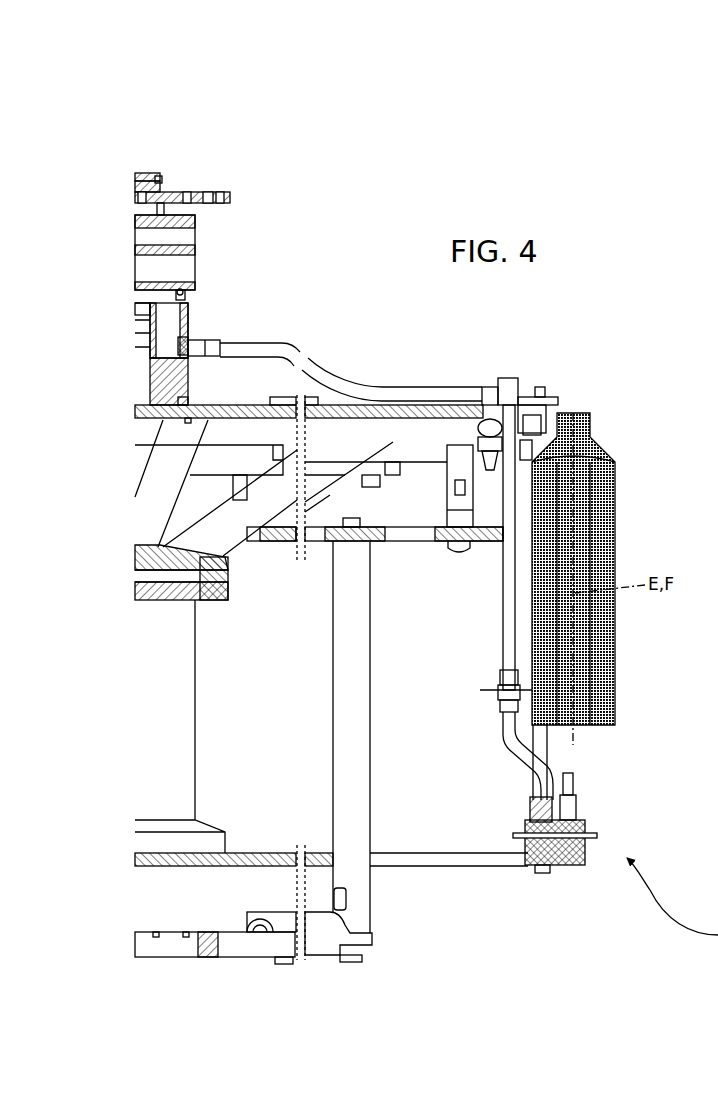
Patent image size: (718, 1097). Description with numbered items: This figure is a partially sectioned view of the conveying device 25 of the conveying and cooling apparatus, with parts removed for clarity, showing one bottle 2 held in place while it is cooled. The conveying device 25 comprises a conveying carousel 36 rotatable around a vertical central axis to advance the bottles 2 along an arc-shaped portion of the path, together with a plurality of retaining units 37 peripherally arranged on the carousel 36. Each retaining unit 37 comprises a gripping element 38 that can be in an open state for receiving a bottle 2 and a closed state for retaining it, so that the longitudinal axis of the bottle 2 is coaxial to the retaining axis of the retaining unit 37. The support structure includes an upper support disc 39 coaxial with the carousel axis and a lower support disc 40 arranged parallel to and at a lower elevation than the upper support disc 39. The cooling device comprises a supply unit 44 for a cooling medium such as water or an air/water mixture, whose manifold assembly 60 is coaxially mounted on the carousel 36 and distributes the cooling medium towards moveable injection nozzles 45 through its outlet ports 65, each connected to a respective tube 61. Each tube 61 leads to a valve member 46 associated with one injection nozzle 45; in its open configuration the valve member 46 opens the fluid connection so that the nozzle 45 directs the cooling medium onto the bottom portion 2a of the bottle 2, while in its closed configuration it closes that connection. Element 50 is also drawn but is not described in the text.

The bottle 2 is at (622, 522).
The bottom portion 2a is at (588, 730).
The conveying device 25 is at (338, 230).
The conveying carousel 36 is at (478, 360).
The retaining unit 37 is at (530, 374).
The gripping element 38 is at (544, 432).
The upper support disc 39 is at (433, 410).
The lower support disc 40 is at (453, 856).
The supply unit 44 is at (170, 168).
The injection nozzle 45 is at (580, 777).
The valve member 46 is at (562, 878).
The connection pipe 50 is at (516, 822).
The manifold assembly 60 is at (192, 300).
The tube 61 is at (327, 376).
The outlet port 65 is at (192, 343).